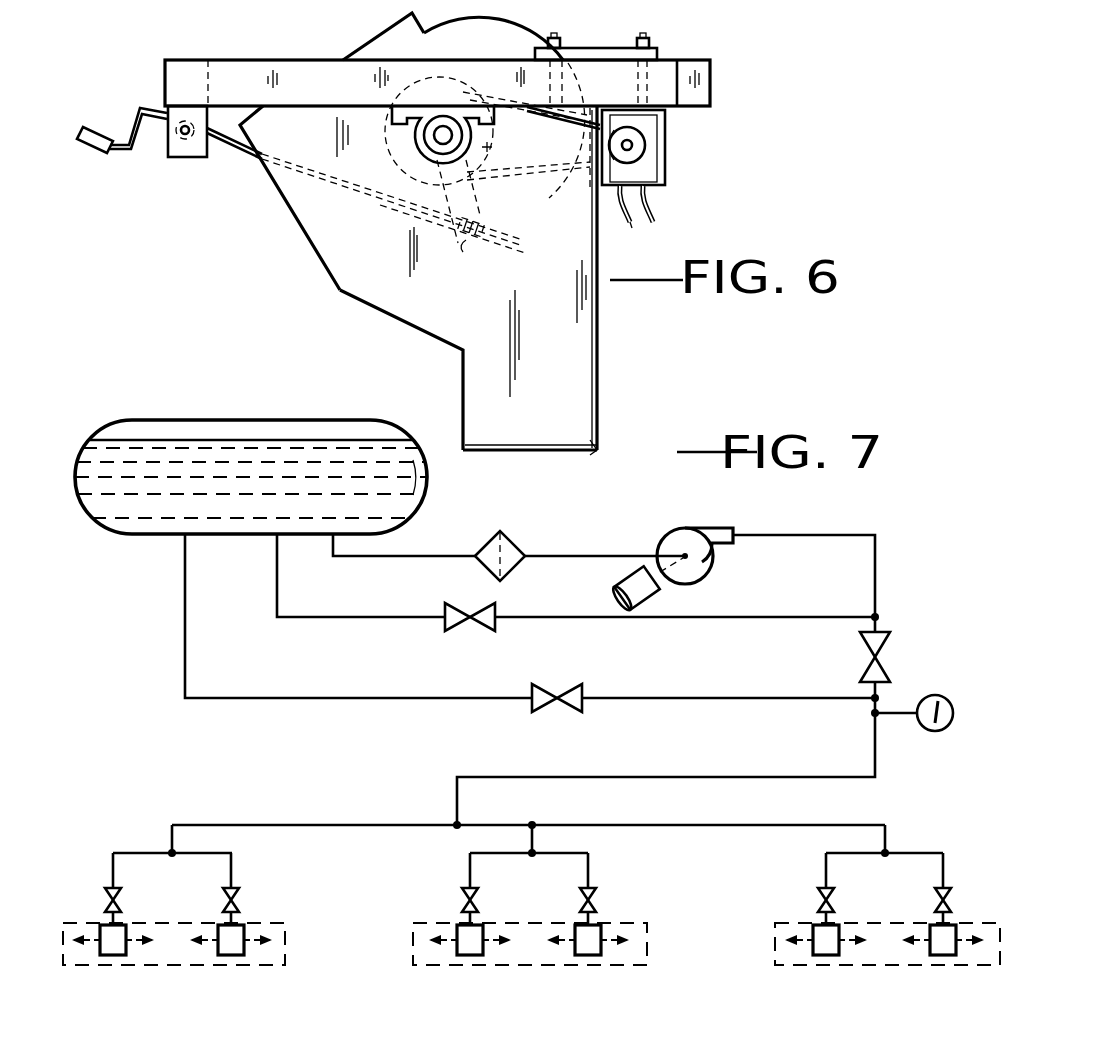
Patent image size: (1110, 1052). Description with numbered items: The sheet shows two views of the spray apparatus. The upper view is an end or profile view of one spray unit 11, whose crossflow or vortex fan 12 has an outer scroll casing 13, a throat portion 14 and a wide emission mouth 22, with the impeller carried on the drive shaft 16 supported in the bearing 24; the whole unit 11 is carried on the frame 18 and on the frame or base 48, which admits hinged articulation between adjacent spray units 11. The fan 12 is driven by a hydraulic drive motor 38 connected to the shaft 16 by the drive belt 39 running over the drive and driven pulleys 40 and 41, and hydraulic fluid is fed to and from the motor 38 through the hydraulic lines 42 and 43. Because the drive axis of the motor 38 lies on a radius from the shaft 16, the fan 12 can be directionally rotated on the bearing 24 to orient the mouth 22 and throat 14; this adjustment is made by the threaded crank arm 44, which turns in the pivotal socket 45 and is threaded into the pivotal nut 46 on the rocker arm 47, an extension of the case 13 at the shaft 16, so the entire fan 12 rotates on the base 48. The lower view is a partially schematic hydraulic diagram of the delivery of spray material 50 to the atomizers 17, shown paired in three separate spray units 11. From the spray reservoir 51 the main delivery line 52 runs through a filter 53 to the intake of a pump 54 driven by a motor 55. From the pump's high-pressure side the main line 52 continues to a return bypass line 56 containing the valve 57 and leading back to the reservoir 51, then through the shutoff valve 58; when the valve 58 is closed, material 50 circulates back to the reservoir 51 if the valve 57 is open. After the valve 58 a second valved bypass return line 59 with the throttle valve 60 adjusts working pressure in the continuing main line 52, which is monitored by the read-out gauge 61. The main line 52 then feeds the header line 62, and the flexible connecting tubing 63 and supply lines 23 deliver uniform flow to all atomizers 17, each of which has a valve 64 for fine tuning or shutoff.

In FIG. 6, the spray unit 11 is at (210, 283).
In FIG. 7, the spray unit 11 is at (175, 967).
In FIG. 6, the crossflow fan 12 is at (337, 288).
In FIG. 6, the outer scroll casing 13 is at (527, 27).
In FIG. 6, the throat portion 14 is at (580, 363).
In FIG. 6, the drive shaft 16 is at (445, 128).
In FIG. 7, the atomizer 17 is at (142, 927).
In FIG. 6, the frame 18 is at (598, 440).
In FIG. 6, the emission opening 22 is at (593, 450).
In FIG. 7, the supply line 23 is at (113, 870).
In FIG. 6, the bearing 24 is at (410, 140).
In FIG. 6, the drive motor 38 is at (673, 152).
In FIG. 6, the drive belt 39 is at (575, 170).
In FIG. 6, the drive pulley 40 is at (640, 137).
In FIG. 6, the driven pulley 41 is at (495, 145).
In FIG. 6, the hydraulic line 42 is at (631, 226).
In FIG. 6, the hydraulic line 43 is at (660, 202).
In FIG. 6, the threaded crank arm 44 is at (150, 110).
In FIG. 6, the pivotal socket 45 is at (188, 143).
In FIG. 6, the pivotal nut 46 is at (462, 250).
In FIG. 6, the rocker arm 47 is at (490, 203).
In FIG. 6, the frame or base 48 is at (680, 58).
In FIG. 7, the spray material 50 is at (217, 452).
In FIG. 7, the spray reservoir 51 is at (422, 498).
In FIG. 7, the main delivery line 52 is at (422, 556).
In FIG. 7, the filter 53 is at (513, 548).
In FIG. 7, the pump 54 is at (690, 533).
In FIG. 7, the motor 55 is at (657, 595).
In FIG. 7, the return bypass line 56 is at (587, 618).
In FIG. 7, the valve 57 is at (470, 623).
In FIG. 7, the shutoff valve 58 is at (889, 650).
In FIG. 7, the second valved bypass return line 59 is at (717, 697).
In FIG. 7, the throttle valve 60 is at (542, 707).
In FIG. 7, the read-out gauge 61 is at (933, 731).
In FIG. 7, the header line 62 is at (610, 823).
In FIG. 7, the connecting tubing 63 is at (170, 838).
In FIG. 7, the valve 64 is at (121, 903).